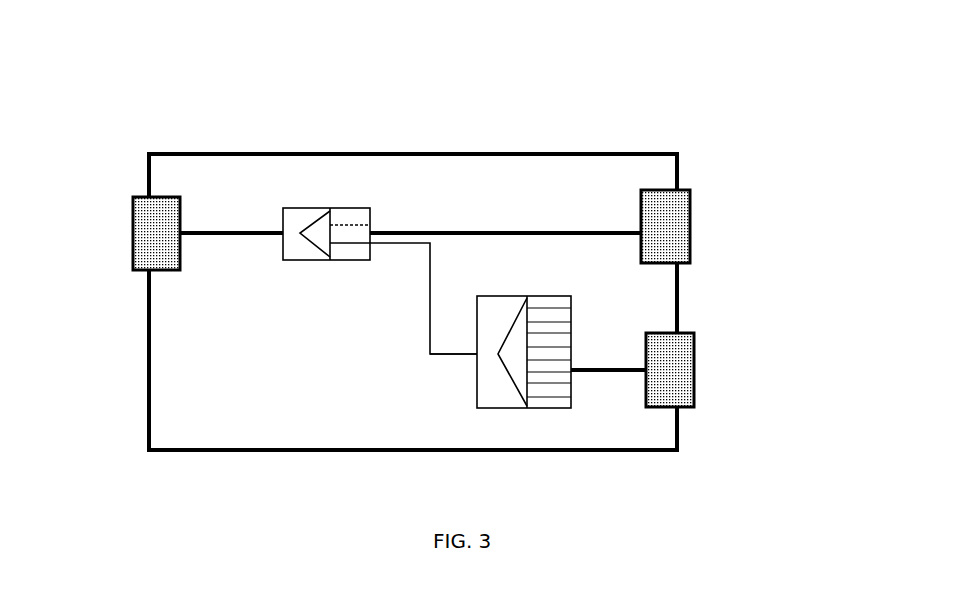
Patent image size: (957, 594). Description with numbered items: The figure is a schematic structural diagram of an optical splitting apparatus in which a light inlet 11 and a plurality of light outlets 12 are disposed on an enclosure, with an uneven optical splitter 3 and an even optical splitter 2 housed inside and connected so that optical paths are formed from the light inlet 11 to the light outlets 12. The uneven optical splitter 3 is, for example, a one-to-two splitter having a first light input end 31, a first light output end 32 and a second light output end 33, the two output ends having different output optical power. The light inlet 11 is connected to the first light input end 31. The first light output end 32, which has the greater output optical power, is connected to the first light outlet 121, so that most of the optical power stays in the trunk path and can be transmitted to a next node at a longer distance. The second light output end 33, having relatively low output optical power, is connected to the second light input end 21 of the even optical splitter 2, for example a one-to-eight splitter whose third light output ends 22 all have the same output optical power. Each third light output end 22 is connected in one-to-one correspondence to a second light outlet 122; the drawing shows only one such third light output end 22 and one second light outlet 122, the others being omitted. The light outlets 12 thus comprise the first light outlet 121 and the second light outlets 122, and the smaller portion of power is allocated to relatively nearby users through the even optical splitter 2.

The light inlet 11 is at (133, 245).
The light outlets 12 is at (755, 298).
The first light outlet 121 is at (668, 223).
The second light outlet 122 is at (714, 370).
The even optical splitter 2 is at (515, 408).
The second light input end 21 is at (463, 357).
The third light output end 22 is at (585, 370).
The uneven optical splitter 3 is at (295, 208).
The first light input end 31 is at (265, 233).
The first light output end 32 is at (388, 233).
The second light output end 33 is at (388, 240).